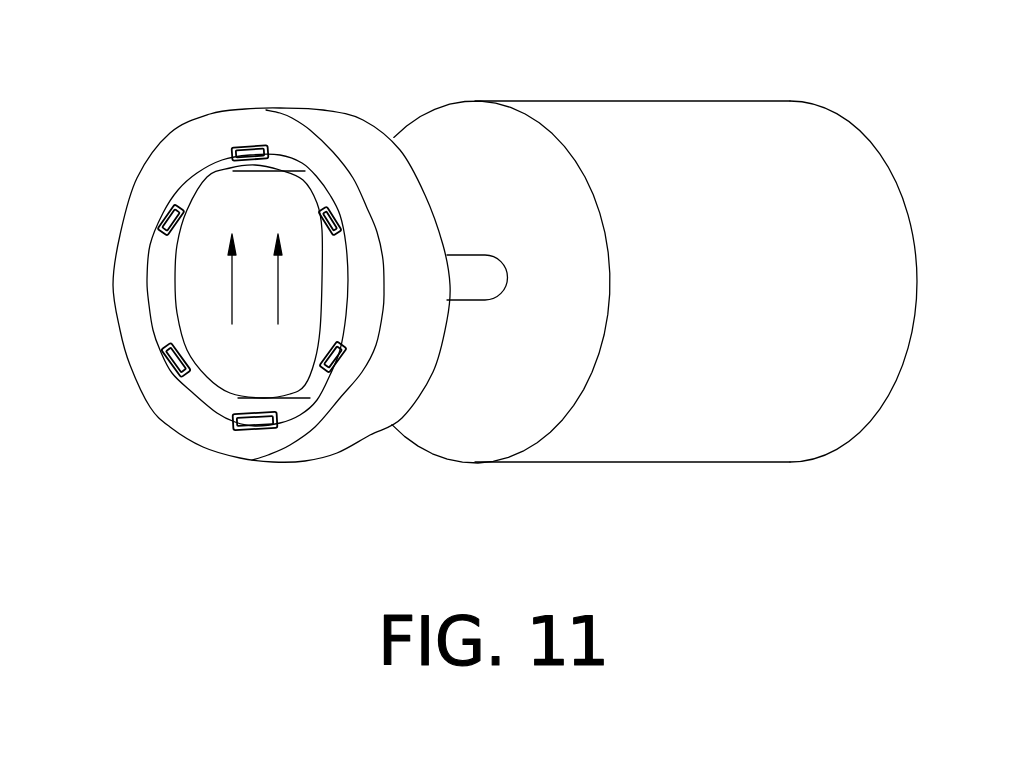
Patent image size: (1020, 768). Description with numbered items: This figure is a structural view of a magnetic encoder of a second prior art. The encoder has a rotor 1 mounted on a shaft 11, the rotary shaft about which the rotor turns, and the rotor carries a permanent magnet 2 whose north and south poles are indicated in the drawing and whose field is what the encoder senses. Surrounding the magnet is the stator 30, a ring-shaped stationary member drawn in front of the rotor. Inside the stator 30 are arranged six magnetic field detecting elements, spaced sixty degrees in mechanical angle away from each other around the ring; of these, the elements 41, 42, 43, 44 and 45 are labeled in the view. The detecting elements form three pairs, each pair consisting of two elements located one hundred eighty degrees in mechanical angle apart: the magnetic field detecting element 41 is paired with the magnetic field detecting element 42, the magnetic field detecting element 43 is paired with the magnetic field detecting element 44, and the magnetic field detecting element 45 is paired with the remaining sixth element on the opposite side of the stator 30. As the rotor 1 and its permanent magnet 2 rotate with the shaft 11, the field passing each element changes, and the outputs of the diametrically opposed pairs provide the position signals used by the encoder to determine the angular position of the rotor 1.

The rotor 1 is at (682, 147).
The shaft 11 is at (477, 287).
The stator 30 is at (372, 172).
The permanent magnet 2 is at (310, 397).
The magnetic field detecting element 41 is at (250, 146).
The magnetic field detecting element 42 is at (240, 430).
The magnetic field detecting element 43 is at (340, 207).
The magnetic field detecting element 44 is at (167, 367).
The magnetic field detecting element 45 is at (163, 212).